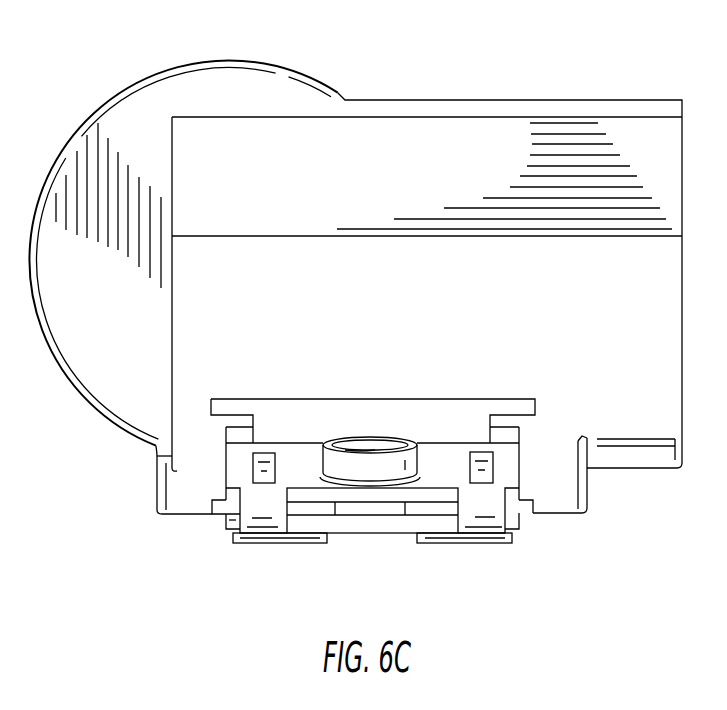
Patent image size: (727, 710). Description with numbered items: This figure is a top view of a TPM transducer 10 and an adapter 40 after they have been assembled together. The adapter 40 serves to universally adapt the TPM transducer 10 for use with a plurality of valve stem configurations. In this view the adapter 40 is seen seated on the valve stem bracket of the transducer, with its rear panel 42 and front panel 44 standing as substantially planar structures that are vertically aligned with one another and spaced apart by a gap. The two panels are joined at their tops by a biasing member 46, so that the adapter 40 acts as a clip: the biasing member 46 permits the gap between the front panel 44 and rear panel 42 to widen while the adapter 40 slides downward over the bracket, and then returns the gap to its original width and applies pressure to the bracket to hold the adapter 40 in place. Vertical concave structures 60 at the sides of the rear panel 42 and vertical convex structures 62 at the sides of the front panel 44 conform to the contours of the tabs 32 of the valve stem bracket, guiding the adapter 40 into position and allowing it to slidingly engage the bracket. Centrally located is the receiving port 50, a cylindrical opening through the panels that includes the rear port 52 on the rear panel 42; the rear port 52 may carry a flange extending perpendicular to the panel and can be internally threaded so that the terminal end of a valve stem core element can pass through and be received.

The TPM transducer 10 is at (65, 88).
The tabs 32 is at (323, 510).
The adapter 40 is at (335, 495).
The rear panel 42 is at (233, 472).
The front panel 44 is at (227, 521).
The biasing member 46 is at (260, 528).
The receiving port 50 is at (337, 433).
The rear port 52 is at (375, 442).
The vertical concave structures 60 is at (265, 462).
The vertical convex structures 62 is at (285, 543).